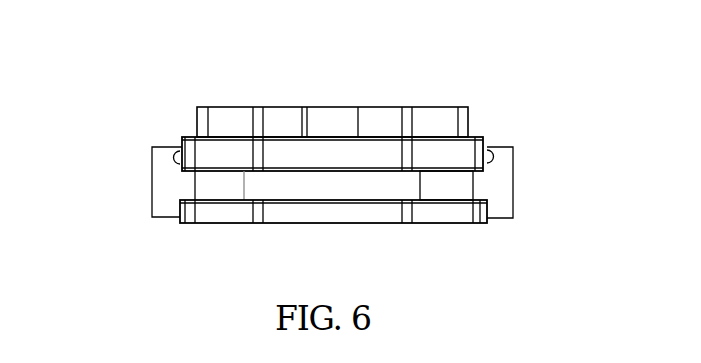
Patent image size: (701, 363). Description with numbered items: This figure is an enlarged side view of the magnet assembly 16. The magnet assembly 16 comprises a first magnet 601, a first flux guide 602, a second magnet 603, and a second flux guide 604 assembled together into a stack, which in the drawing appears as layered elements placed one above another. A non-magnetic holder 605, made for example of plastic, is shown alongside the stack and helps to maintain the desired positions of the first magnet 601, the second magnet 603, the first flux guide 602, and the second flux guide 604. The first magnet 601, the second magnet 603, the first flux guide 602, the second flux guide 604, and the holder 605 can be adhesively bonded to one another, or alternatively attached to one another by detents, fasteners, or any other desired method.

The magnet assembly 16 is at (242, 79).
The first magnet 601 is at (470, 115).
The first flux guide 602 is at (485, 140).
The second magnet 603 is at (475, 187).
The second flux guide 604 is at (370, 223).
The holder 605 is at (150, 193).